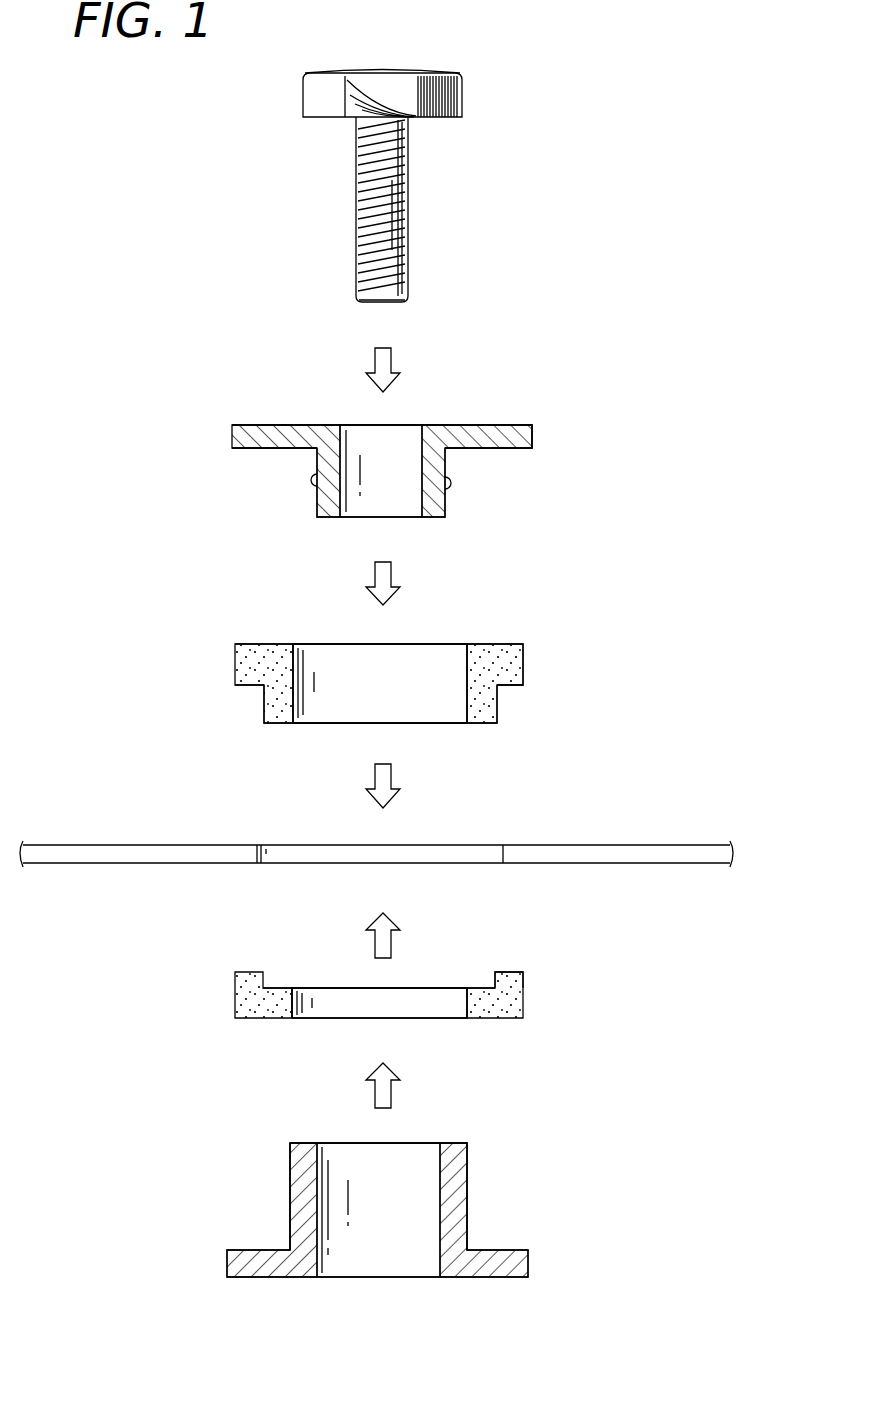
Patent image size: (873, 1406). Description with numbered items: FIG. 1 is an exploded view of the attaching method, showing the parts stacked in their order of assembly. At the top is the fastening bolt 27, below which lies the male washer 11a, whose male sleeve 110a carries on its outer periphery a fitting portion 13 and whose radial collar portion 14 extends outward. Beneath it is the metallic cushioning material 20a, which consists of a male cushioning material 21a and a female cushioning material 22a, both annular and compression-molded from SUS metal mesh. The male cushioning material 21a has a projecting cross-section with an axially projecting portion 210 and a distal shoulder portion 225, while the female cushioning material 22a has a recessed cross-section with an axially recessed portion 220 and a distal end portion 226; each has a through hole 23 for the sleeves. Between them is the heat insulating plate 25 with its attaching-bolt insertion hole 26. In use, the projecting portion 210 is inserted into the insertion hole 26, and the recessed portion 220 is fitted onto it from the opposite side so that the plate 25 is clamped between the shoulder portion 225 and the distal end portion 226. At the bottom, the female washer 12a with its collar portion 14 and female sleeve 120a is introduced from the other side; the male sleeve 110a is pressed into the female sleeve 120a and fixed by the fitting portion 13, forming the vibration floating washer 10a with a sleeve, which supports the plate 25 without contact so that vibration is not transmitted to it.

The fastening bolt 27 is at (408, 177).
The collar portion 14 is at (485, 425).
The vibration floating washer with a sleeve 10a is at (444, 842).
The male washer 11a is at (548, 437).
The male sleeve 110a is at (447, 455).
The fitting portion 13 is at (466, 485).
The through hole 23 is at (438, 654).
The metallic cushioning material 20a is at (447, 829).
The male cushioning material 21a is at (538, 674).
The distal shoulder portion 225 is at (517, 687).
The projecting portion 210 is at (497, 713).
The attaching-bolt insertion hole 26 is at (468, 852).
The heat insulating plate 25 is at (376, 829).
The recessed portion 220 is at (476, 990).
The distal end portion 226 is at (510, 972).
The female cushioning material 22a is at (443, 973).
The female sleeve 120a is at (467, 1190).
The female washer 12a is at (448, 1210).